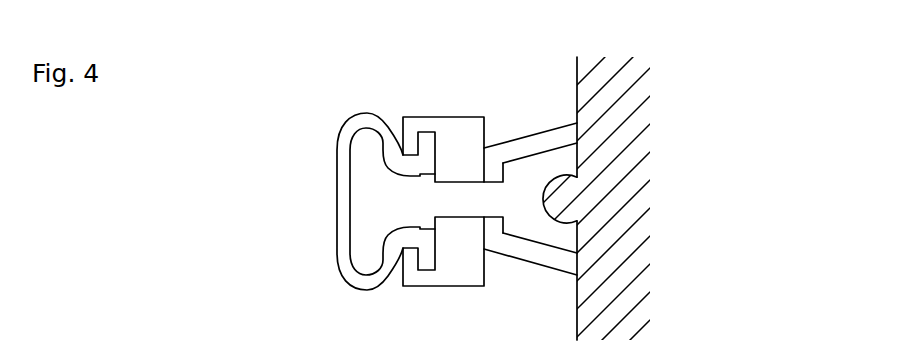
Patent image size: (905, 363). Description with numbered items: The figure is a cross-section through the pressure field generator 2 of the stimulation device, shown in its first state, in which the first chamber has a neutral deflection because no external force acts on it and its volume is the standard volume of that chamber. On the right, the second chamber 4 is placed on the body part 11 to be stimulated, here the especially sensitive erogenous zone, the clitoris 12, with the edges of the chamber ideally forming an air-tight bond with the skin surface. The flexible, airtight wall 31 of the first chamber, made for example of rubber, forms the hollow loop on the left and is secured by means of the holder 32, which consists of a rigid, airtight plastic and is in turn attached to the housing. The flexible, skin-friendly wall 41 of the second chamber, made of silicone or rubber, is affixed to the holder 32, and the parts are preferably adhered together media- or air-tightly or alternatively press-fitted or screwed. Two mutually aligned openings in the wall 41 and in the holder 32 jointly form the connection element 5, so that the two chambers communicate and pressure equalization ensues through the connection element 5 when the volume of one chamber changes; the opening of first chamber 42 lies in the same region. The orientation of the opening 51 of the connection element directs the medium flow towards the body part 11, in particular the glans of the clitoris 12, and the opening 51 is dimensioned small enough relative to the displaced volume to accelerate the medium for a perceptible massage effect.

The pressure field generator 2 is at (375, 210).
The wall of first chamber 31 is at (347, 135).
The holder 32 is at (465, 263).
The connection element 5 is at (463, 197).
The opening of connection element to second chamber 51 is at (505, 198).
The second chamber 4 is at (600, 193).
The wall of second chamber 41 is at (560, 140).
The opening of first chamber 42 is at (560, 233).
The body part 11 is at (622, 85).
The clitoris 12 is at (572, 190).